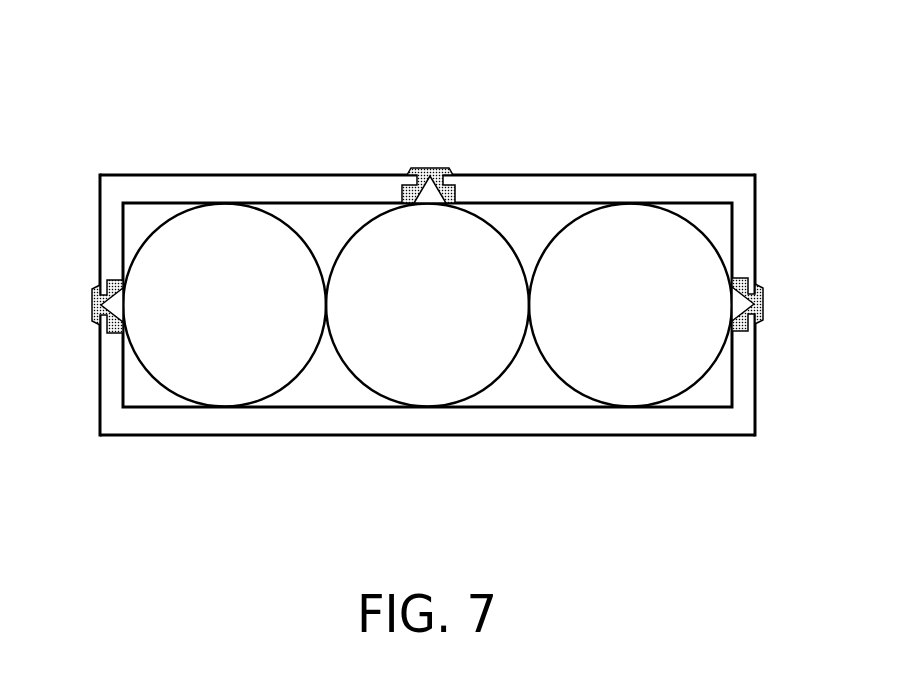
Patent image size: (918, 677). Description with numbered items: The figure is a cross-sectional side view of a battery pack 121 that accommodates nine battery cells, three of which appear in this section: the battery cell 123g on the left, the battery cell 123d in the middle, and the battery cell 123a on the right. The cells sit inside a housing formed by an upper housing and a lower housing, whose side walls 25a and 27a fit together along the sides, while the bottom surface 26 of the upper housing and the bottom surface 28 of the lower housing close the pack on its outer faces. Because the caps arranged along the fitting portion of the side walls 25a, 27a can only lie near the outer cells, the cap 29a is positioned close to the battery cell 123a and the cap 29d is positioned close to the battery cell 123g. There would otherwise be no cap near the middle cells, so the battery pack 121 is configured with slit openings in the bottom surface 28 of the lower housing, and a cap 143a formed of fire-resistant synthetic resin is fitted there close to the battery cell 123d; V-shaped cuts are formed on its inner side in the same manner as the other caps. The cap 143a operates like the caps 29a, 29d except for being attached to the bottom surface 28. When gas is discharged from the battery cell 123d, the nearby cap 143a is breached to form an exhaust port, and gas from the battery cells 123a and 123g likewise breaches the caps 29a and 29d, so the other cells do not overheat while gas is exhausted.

The battery pack 121 is at (291, 124).
The cap 143a is at (446, 166).
The bottom surface of the lower housing 28 is at (693, 174).
The bottom surface of the upper housing 26 is at (323, 437).
The side wall of the lower housing 27a is at (112, 232).
The side wall of the upper housing 25a is at (108, 405).
The cap 29d is at (93, 287).
The cap 29a is at (765, 290).
The battery cell 123g is at (193, 322).
The battery cell 123d is at (393, 322).
The battery cell 123a is at (593, 322).